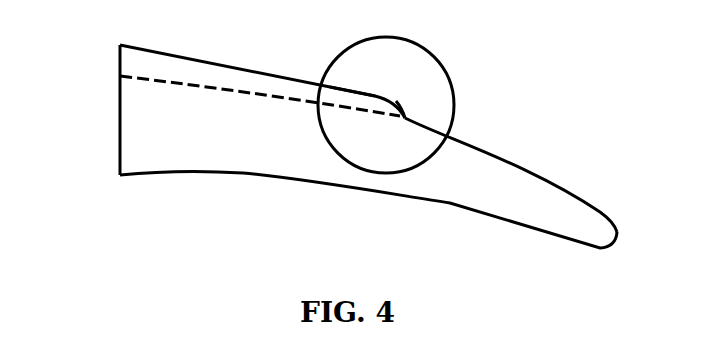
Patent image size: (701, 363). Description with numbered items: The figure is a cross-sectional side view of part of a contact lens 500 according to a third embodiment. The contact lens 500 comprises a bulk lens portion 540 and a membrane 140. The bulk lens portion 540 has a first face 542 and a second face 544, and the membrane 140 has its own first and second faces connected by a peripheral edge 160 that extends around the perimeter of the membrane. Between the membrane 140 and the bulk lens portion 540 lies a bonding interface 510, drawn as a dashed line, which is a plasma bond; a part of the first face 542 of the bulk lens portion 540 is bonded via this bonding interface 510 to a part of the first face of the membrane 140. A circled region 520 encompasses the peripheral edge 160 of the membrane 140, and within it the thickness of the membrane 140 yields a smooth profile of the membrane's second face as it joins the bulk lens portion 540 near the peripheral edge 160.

The contact lens 500 is at (340, 153).
The bonding interface 510 is at (167, 80).
The circled region 520 is at (454, 105).
The bulk lens portion 540 is at (248, 147).
The first face 542 is at (527, 163).
The second face 544 is at (497, 220).
The membrane 140 is at (345, 95).
The peripheral edge 160 is at (407, 118).